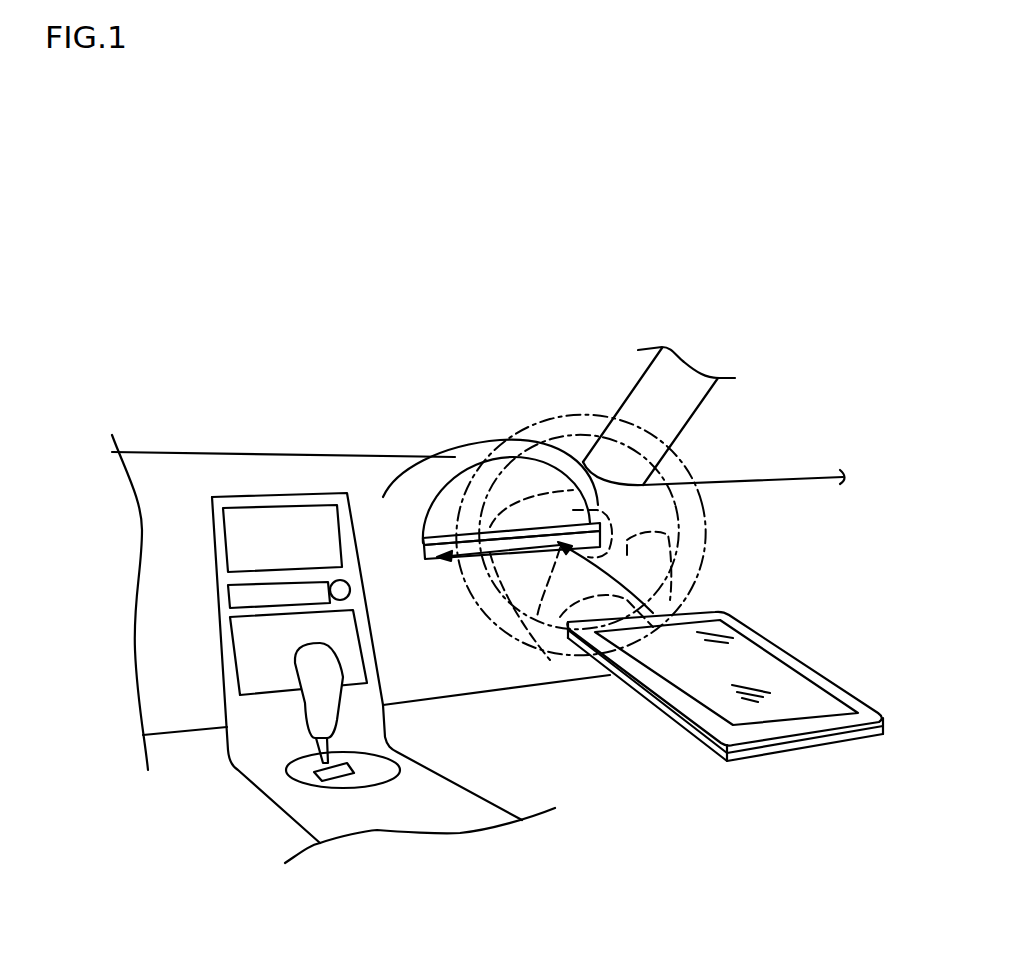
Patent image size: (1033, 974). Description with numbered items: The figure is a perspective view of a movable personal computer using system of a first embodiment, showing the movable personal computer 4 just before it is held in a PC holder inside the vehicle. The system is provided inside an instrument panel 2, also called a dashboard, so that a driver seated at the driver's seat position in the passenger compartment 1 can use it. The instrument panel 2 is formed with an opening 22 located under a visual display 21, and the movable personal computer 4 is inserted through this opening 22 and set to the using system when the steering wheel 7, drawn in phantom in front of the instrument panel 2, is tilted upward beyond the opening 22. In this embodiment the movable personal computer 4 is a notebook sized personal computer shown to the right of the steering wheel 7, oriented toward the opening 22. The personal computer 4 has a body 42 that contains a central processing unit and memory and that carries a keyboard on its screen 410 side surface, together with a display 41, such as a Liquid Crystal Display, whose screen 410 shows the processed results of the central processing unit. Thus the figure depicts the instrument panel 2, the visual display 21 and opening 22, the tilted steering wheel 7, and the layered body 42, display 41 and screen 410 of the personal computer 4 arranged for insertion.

The passenger compartment 1 is at (780, 417).
The instrument panel 2 is at (358, 467).
The visual display 21 is at (453, 493).
The opening 22 is at (466, 560).
The movable personal computer 4 is at (730, 697).
The display 41 is at (757, 733).
The body 42 is at (810, 738).
The screen 410 is at (740, 667).
The steering wheel 7 is at (560, 638).